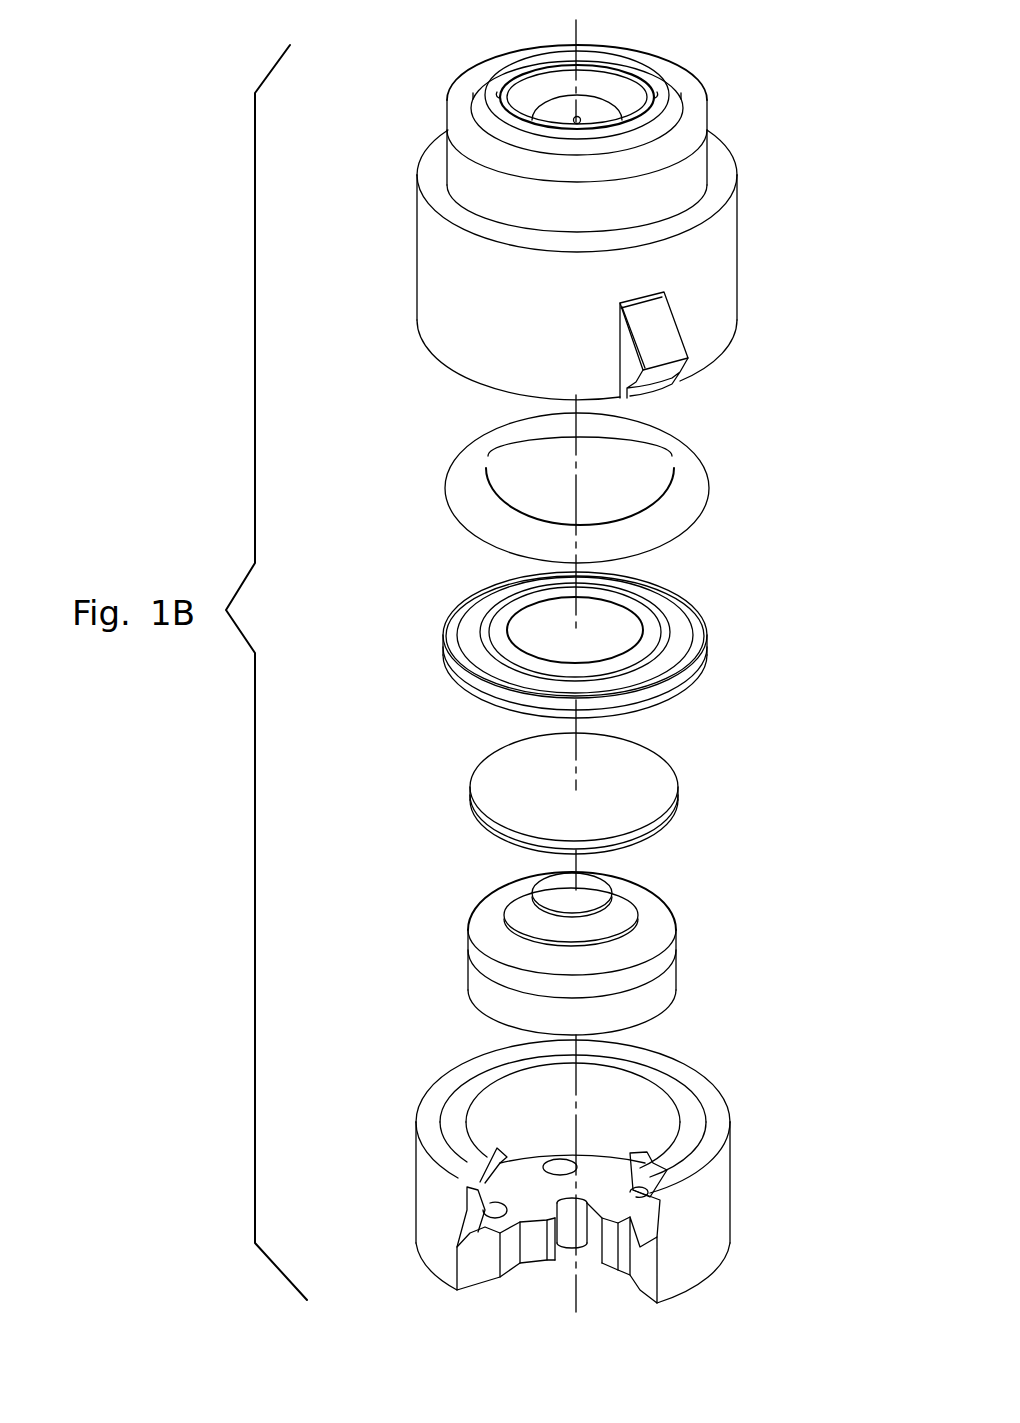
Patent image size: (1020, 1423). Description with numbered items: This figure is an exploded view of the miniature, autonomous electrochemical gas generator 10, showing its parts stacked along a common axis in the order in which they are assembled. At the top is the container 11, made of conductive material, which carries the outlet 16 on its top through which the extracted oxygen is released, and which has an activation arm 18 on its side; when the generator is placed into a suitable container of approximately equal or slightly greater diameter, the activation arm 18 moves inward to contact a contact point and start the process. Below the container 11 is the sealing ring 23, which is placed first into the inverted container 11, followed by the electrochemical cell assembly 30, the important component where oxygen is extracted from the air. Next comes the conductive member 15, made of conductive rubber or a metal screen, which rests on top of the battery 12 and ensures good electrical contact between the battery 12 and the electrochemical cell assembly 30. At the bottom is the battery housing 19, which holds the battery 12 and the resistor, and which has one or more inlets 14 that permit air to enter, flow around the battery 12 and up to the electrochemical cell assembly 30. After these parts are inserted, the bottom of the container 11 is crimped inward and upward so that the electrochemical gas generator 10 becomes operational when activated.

The electrochemical gas generator 10 is at (407, 98).
The container 11 is at (708, 265).
The battery 12 is at (665, 982).
The inlet 14 is at (558, 1166).
The conductive member 15 is at (655, 787).
The outlet 16 is at (578, 120).
The activation arm 18 is at (662, 344).
The battery housing 19 is at (712, 1205).
The sealing ring 23 is at (672, 515).
The electrochemical cell assembly 30 is at (677, 640).